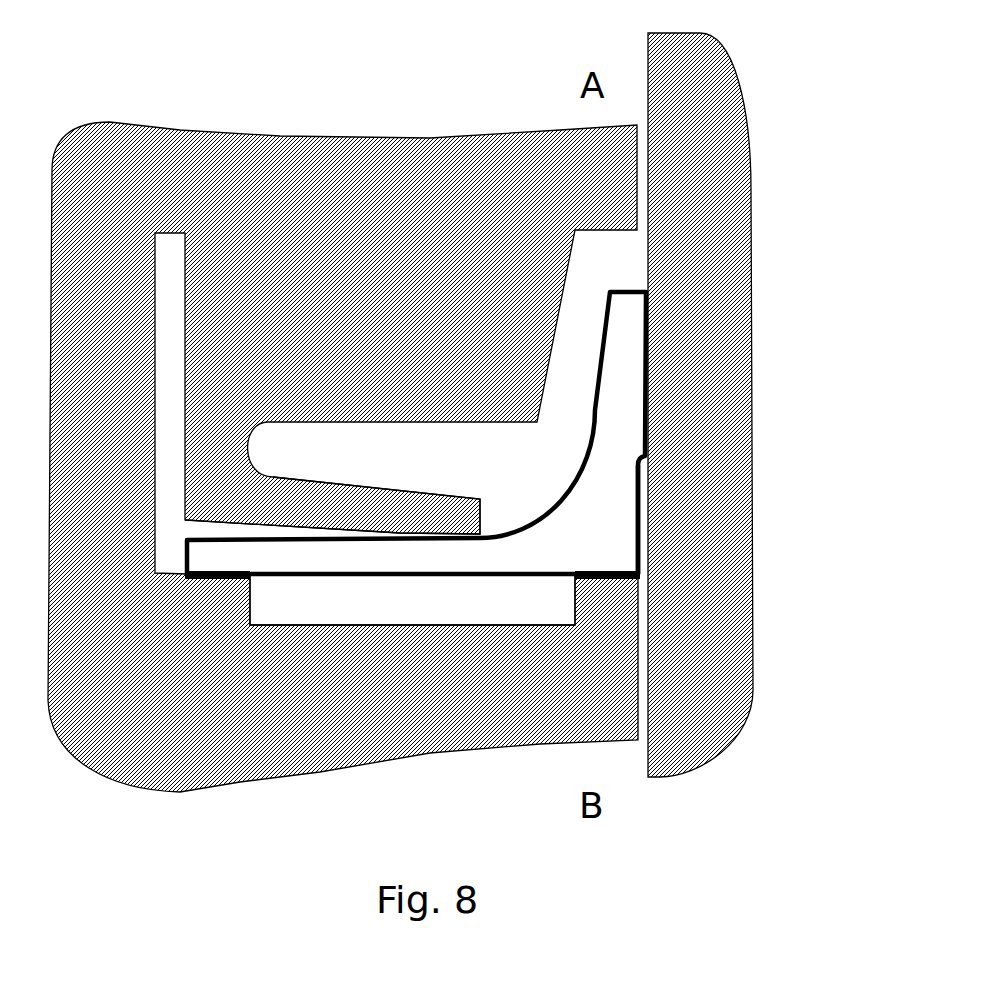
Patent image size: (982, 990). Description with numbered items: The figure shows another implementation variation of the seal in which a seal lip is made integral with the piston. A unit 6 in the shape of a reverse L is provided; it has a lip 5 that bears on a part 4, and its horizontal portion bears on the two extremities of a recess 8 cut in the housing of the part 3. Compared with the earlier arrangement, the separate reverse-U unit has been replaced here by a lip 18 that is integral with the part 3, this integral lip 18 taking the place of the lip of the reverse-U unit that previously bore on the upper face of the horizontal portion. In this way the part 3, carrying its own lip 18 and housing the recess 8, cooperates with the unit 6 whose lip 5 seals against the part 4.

The part 3 is at (422, 138).
The part 4 is at (751, 227).
The lip 5 is at (628, 352).
The unit 6 is at (640, 522).
The lip 18 is at (415, 513).
The recess 8 is at (397, 598).